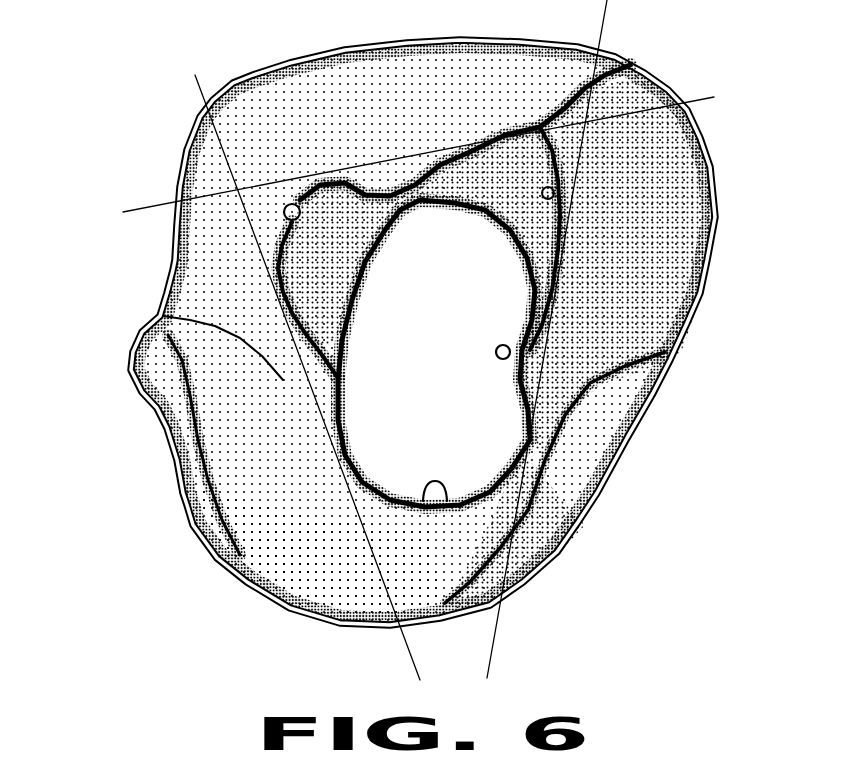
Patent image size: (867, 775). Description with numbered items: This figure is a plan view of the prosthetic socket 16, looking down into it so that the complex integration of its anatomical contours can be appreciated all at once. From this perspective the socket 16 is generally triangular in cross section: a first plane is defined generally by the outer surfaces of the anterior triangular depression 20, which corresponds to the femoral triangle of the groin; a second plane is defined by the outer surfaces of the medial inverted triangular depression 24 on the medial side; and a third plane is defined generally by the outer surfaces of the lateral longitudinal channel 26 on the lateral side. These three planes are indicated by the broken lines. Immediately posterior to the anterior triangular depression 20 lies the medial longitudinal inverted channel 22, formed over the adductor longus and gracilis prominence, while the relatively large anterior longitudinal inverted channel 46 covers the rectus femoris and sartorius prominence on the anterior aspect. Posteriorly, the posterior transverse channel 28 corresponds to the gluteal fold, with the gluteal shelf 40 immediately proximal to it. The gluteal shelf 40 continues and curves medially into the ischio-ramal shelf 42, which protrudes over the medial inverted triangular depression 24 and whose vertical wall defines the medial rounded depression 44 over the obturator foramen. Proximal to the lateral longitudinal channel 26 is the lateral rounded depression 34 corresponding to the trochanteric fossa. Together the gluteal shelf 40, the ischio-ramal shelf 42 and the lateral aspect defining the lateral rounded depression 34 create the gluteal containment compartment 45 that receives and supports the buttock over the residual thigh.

The socket 16 is at (186, 27).
The anterior triangular depression 20 is at (465, 101).
The medial longitudinal inverted channel 22 is at (284, 212).
The medial inverted triangular depression 24 is at (282, 288).
The lateral longitudinal channel 26 is at (626, 337).
The posterior transverse channel 28 is at (488, 568).
The lateral rounded depression 34 is at (588, 477).
The gluteal shelf 40 is at (342, 589).
The ischio-ramal shelf 42 is at (163, 316).
The medial rounded depression 44 is at (153, 445).
The gluteal containment compartment 45 is at (196, 535).
The anterior longitudinal inverted channel 46 is at (653, 228).